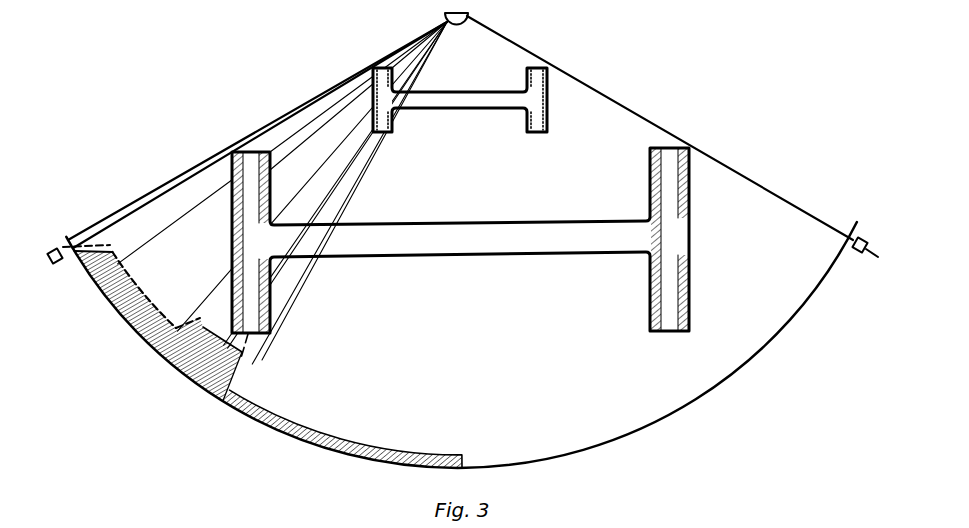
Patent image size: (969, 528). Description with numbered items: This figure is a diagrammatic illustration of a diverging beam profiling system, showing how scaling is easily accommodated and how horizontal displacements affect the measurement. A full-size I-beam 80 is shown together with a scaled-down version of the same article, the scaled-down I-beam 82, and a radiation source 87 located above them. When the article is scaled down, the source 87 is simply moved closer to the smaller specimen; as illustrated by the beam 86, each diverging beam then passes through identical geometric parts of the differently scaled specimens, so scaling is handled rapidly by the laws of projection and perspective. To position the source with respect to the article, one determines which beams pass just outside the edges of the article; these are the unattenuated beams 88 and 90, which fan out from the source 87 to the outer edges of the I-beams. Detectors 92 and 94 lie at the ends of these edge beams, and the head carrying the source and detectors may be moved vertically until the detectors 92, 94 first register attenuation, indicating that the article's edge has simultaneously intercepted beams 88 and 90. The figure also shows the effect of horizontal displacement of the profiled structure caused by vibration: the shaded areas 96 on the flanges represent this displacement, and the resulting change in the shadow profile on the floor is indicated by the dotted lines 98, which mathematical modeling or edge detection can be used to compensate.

The I-beam 80 is at (482, 220).
The scaled-down I-beam 82 is at (449, 93).
The beam 86 is at (327, 95).
The source 87 is at (468, 13).
The unattenuated beam 88 is at (191, 171).
The unattenuated beam 90 is at (723, 165).
The detector 92 is at (866, 253).
The detector 94 is at (62, 264).
The shaded areas 96 is at (375, 133).
The dotted lines 98 is at (100, 243).